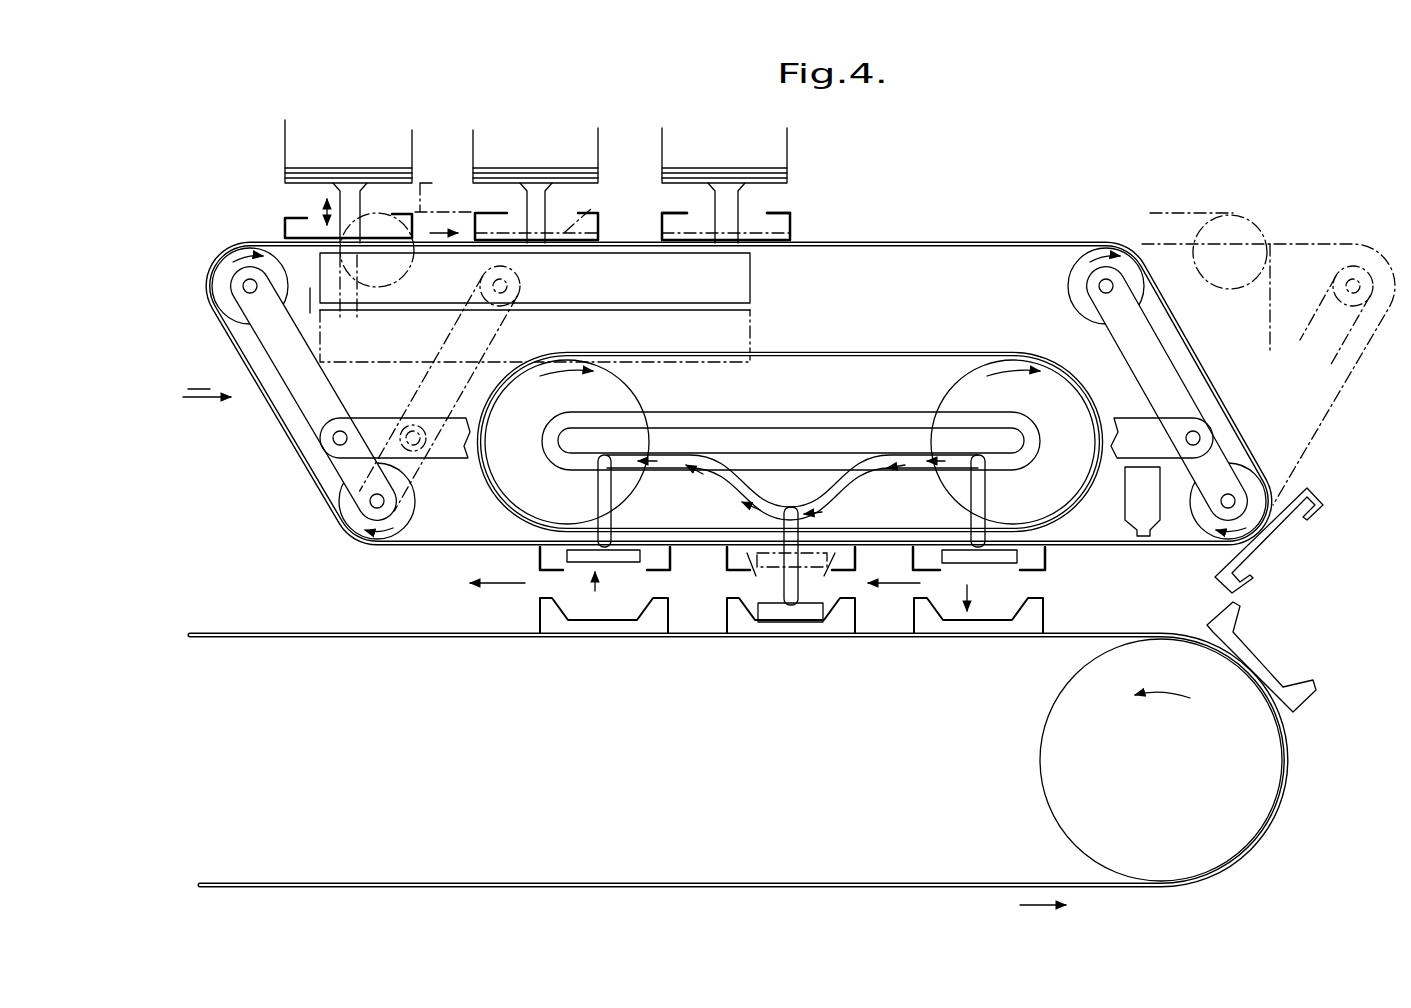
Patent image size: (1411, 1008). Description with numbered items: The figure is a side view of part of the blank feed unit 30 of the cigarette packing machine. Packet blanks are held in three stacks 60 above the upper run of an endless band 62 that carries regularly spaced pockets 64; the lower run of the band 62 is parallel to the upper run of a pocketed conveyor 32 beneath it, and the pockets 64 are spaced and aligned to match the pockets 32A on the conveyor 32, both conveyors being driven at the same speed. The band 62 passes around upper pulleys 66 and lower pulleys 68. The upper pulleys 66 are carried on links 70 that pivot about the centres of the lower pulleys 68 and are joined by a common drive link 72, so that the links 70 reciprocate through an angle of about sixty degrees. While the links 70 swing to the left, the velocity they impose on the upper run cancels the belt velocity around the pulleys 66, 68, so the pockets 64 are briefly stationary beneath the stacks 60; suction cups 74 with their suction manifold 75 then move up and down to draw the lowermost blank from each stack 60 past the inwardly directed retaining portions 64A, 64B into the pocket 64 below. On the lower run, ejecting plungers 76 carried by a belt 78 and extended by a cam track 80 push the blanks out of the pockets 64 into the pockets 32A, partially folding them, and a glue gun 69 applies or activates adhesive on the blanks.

The blank feed unit 30 is at (948, 182).
The conveyor 32 is at (388, 637).
The pockets 32A is at (848, 613).
The stacks 60 is at (487, 164).
The endless band 62 is at (968, 243).
The pockets 64 is at (284, 218).
The inwardly directed portion 64A is at (784, 214).
The inwardly directed portion 64B is at (665, 215).
The upper pulleys 66 is at (228, 266).
The lower pulleys 68 is at (351, 512).
The glue gun 69 is at (1138, 496).
The links 70 is at (302, 390).
The common drive link 72 is at (1130, 428).
The suction cups 74 is at (334, 187).
The suction manifold 75 is at (735, 278).
The ejecting plungers 76 is at (1000, 565).
The belt 78 is at (874, 352).
The cam track 80 is at (730, 487).